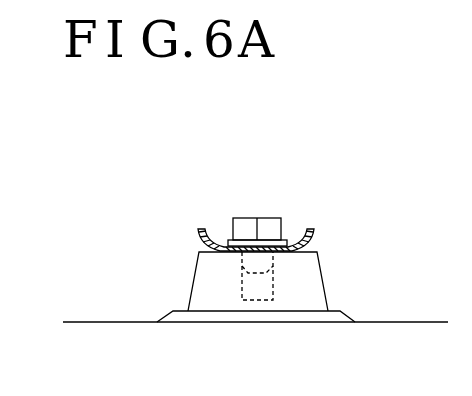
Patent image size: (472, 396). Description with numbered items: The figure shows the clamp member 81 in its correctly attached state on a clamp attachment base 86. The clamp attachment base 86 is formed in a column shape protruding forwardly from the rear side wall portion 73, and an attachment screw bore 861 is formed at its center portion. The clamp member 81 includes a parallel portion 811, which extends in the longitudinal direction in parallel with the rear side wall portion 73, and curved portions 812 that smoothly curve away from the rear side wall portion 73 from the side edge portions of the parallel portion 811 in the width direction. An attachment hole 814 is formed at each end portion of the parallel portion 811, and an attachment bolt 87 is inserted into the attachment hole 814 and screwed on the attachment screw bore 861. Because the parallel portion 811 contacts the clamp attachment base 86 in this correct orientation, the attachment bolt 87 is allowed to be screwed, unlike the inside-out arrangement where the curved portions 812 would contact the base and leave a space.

The rear side wall portion 73 is at (275, 368).
The clamp attachment base 86 is at (208, 290).
The attachment screw bore 861 is at (273, 282).
The clamp member 81 is at (295, 172).
The attachment bolt 87 is at (268, 222).
The attachment hole 814 is at (285, 252).
The parallel portion 811 is at (291, 169).
The curved portion 812 is at (211, 226).